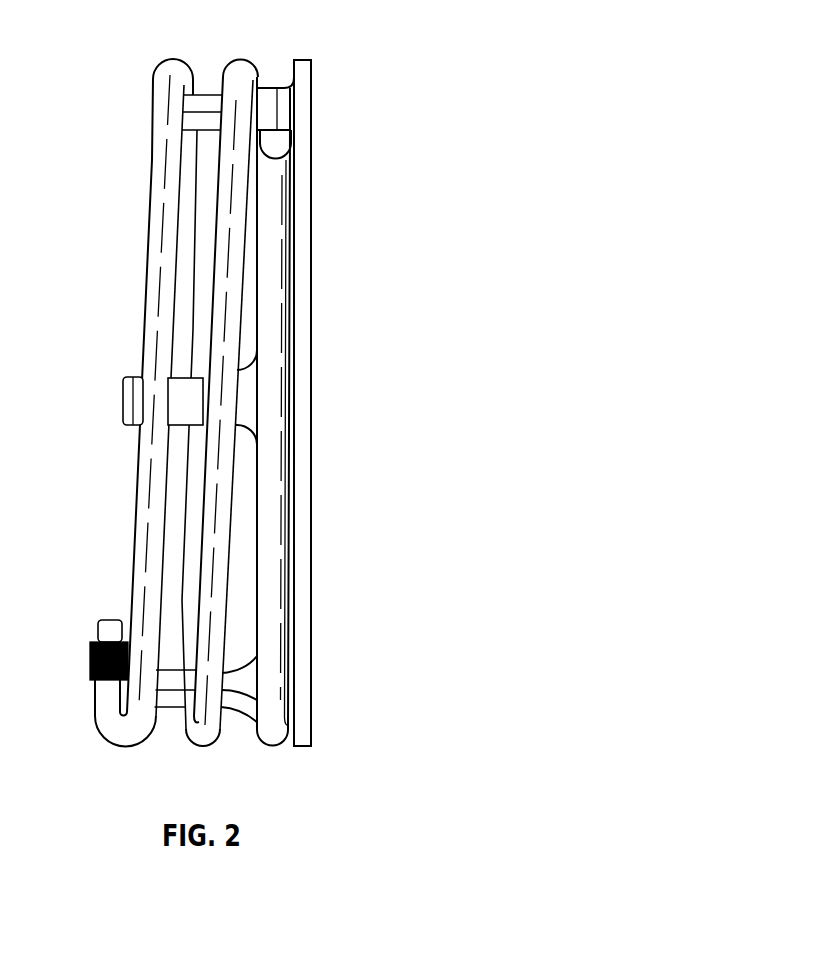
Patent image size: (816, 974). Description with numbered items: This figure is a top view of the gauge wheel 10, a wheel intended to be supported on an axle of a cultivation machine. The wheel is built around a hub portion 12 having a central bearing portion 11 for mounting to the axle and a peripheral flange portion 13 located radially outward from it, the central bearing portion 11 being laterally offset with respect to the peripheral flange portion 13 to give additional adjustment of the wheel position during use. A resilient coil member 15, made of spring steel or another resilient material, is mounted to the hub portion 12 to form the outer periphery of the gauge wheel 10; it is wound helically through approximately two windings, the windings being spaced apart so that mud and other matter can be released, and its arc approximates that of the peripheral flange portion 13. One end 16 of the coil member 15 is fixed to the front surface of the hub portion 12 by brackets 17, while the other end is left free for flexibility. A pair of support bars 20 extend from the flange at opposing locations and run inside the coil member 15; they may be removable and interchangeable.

The gauge wheel 10 is at (422, 28).
The central bearing portion 11 is at (123, 398).
The hub portion 12 is at (202, 397).
The peripheral flange portion 13 is at (297, 523).
The resilient coil member 15 is at (167, 160).
The end of the coil member 16 is at (107, 626).
The brackets 17 is at (88, 663).
The support bars 20 is at (203, 96).